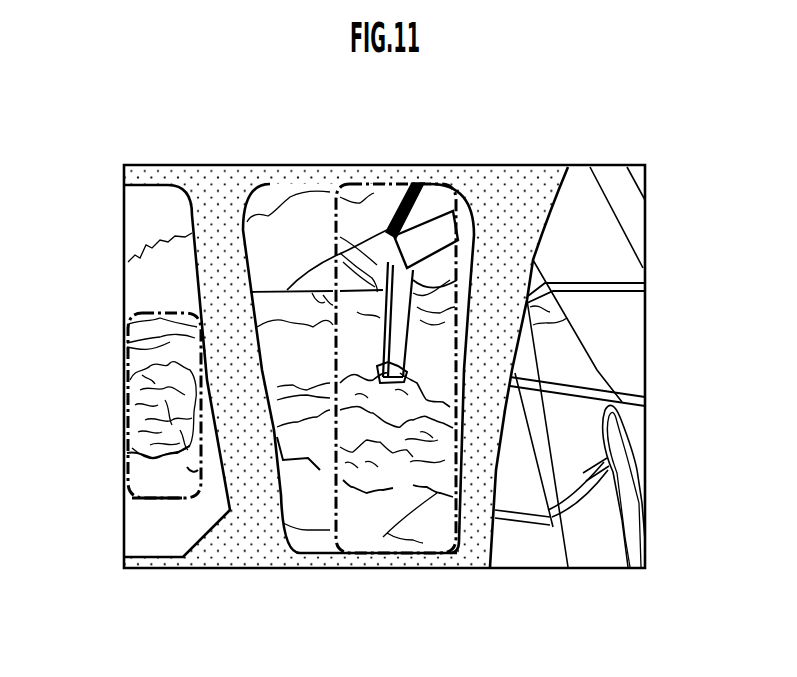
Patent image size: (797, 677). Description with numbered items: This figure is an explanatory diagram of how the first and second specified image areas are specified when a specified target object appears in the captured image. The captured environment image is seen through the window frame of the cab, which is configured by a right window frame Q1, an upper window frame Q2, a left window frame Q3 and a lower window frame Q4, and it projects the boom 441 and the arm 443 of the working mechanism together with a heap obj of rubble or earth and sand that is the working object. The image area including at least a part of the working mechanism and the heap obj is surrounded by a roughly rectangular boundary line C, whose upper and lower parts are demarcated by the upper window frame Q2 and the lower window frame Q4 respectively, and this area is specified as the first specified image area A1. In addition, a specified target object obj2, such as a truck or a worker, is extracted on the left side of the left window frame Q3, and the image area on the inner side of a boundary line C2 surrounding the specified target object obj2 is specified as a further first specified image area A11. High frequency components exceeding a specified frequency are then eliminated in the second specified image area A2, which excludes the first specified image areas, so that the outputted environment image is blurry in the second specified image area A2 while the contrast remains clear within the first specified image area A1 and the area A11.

The upper window frame Q2 is at (322, 160).
The boundary line C is at (423, 176).
The first specified image area A1 is at (420, 345).
The second specified image area A2 is at (150, 224).
The left window frame Q3 is at (188, 273).
The arm 443 is at (378, 339).
The specified target object obj2 is at (124, 408).
The first specified image area A11 is at (153, 474).
The boundary line C2 is at (150, 505).
The heap of rubble or earth and sand obj is at (310, 460).
The lower window frame Q4 is at (345, 572).
The boom 441 is at (636, 220).
The right window frame Q1 is at (520, 360).